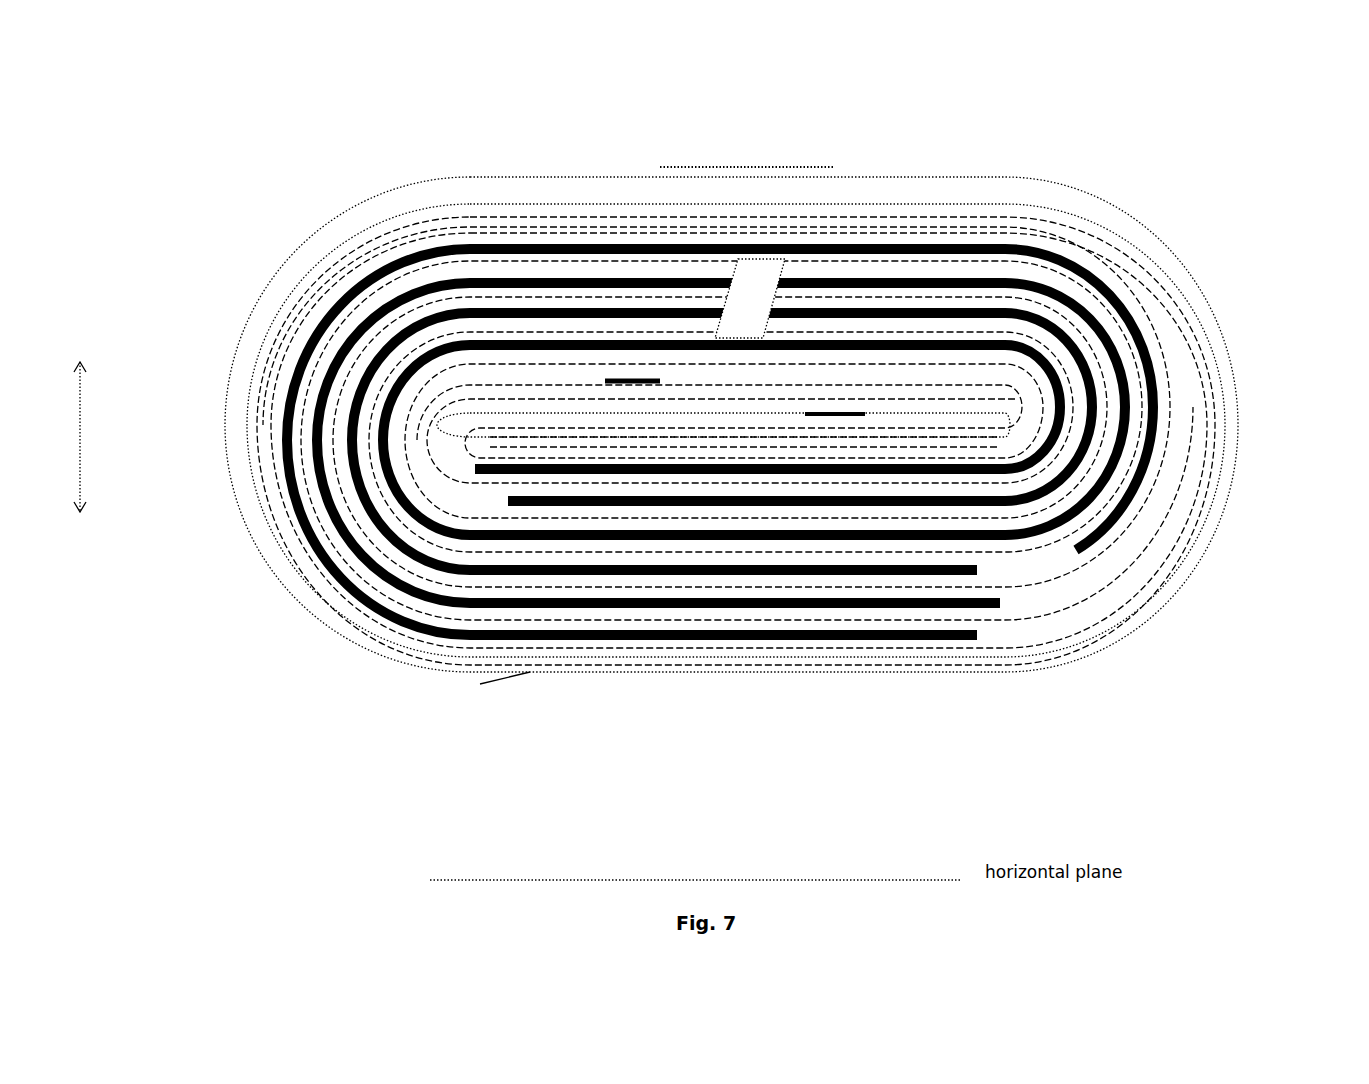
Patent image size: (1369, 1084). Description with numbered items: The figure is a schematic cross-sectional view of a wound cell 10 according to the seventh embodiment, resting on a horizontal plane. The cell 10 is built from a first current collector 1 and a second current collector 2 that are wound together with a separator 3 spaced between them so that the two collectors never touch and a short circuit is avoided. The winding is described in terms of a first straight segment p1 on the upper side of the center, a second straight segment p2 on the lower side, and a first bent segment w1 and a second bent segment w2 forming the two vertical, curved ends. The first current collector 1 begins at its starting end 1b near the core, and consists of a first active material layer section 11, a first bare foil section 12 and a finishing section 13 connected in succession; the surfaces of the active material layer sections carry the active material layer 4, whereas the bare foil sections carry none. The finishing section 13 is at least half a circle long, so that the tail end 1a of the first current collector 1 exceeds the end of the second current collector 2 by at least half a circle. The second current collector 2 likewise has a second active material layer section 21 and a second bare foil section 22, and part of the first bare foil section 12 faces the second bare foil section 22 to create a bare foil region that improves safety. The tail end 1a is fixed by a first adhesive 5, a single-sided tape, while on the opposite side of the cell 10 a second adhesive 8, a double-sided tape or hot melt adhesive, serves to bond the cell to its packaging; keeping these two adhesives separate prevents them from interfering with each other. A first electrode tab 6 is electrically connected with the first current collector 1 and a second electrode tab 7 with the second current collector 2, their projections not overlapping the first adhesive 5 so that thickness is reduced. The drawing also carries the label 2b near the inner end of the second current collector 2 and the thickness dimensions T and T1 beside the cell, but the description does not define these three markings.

The first current collector 1 is at (744, 485).
The tail end 1a is at (500, 680).
The starting end 1b is at (745, 395).
The second current collector 2 is at (775, 401).
The second active material layer section 21 is at (1086, 310).
The second bare foil section 22 is at (1066, 240).
The inner electrode end 2b is at (945, 410).
The separator 3 is at (1222, 520).
The active material layer 4 is at (770, 642).
The first adhesive 5 is at (572, 676).
The first electrode tab 6 is at (660, 378).
The second electrode tab 7 is at (848, 405).
The second adhesive 8 is at (703, 165).
The cell 10 is at (726, 114).
The first active material layer section 11 is at (739, 489).
The first bare foil section 12 is at (1060, 640).
The finishing section 13 is at (1140, 610).
The first straight segment p1 is at (812, 138).
The second straight segment p2 is at (700, 688).
The first bent segment w1 is at (1258, 385).
The second bent segment w2 is at (215, 562).
The thickness T is at (79, 416).
The thickness T1 is at (86, 541).